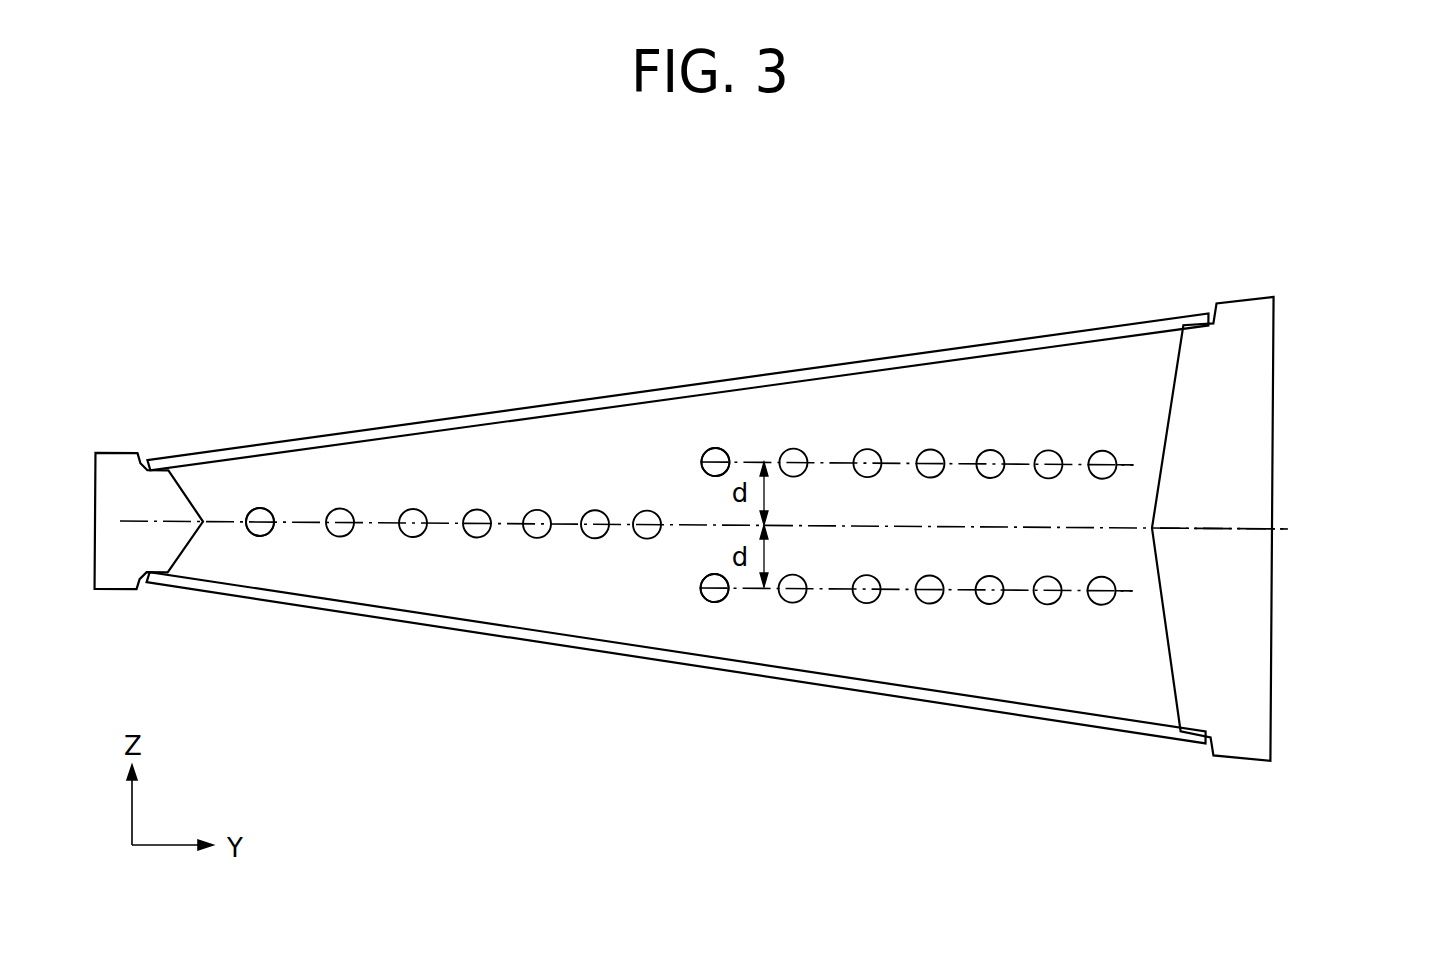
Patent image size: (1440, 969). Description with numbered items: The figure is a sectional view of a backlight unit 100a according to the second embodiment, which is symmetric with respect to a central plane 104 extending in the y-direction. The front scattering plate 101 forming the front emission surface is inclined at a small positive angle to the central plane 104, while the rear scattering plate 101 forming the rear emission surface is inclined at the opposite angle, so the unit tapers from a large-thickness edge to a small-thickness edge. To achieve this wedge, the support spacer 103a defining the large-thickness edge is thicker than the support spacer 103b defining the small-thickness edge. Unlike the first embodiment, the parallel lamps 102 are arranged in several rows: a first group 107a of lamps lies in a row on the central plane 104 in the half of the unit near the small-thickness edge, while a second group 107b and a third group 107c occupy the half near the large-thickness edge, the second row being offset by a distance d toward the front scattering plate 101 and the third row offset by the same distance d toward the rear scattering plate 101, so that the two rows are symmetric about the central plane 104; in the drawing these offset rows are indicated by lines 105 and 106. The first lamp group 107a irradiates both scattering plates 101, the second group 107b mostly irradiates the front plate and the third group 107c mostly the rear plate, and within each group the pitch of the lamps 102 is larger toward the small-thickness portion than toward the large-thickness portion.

The backlight unit 100a is at (1298, 196).
The scattering plate 101 is at (414, 628).
The lamp 102 is at (258, 508).
The support spacer 103a is at (1276, 366).
The support spacer 103b is at (94, 500).
The central plane 104 is at (1228, 530).
The upper axis line 105 is at (1139, 465).
The lower axis line 106 is at (1131, 593).
The first group of lamps 107a is at (508, 480).
The second group of lamps 107b is at (957, 422).
The third group of lamps 107c is at (949, 640).